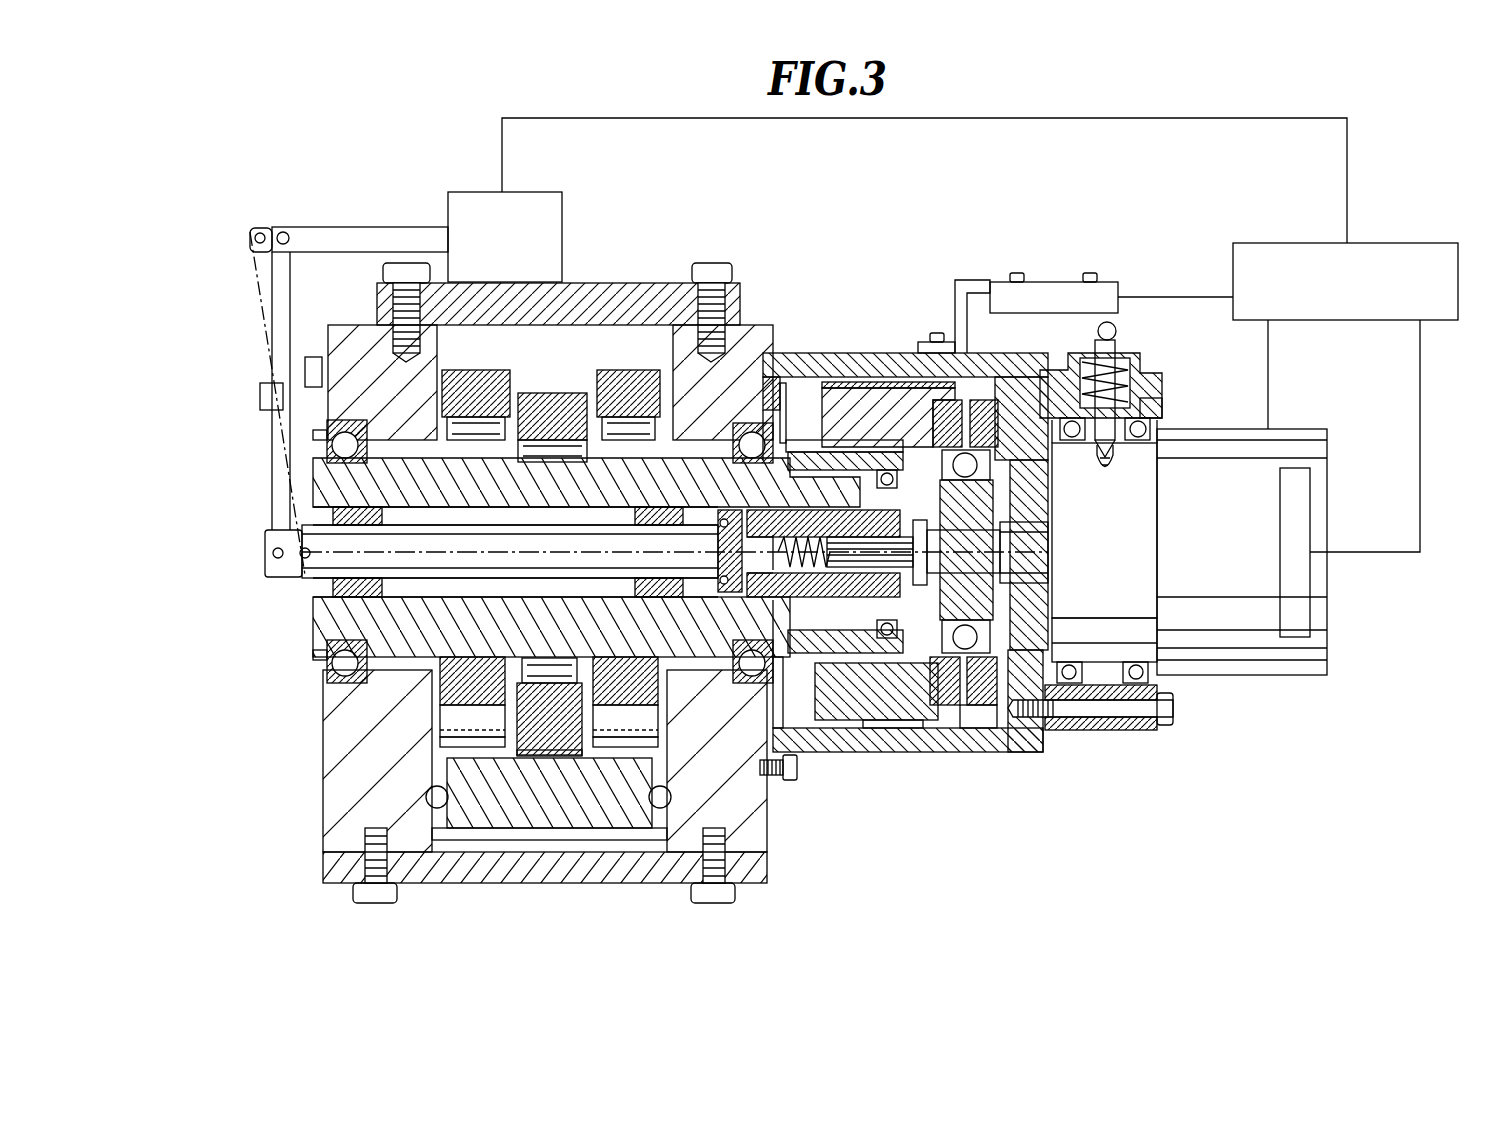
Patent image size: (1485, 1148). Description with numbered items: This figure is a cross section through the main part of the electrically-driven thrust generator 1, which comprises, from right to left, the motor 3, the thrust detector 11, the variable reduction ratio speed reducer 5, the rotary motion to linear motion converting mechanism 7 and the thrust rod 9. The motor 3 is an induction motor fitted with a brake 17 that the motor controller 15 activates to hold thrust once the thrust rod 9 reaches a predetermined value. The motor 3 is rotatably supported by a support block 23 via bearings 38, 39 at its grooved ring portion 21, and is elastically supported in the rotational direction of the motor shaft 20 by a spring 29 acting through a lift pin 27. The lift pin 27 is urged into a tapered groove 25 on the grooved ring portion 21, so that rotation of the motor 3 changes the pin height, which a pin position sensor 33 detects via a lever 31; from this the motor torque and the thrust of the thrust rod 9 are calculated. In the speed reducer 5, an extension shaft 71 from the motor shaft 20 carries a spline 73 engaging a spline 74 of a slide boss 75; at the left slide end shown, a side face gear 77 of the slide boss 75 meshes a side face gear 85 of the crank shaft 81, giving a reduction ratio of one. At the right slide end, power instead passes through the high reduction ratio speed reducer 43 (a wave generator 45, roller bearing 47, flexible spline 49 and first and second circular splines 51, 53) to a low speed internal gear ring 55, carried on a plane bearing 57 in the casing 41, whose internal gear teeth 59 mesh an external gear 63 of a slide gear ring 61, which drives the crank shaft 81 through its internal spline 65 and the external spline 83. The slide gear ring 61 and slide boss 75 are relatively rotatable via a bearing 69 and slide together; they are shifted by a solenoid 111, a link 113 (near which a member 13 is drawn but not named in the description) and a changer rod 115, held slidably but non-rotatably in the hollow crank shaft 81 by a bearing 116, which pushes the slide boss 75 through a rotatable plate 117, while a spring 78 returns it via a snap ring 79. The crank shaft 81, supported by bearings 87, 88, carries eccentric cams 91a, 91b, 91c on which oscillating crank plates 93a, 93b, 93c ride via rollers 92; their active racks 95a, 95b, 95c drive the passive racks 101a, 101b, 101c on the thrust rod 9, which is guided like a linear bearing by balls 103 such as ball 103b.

The electrically-driven thrust generator 1 is at (290, 172).
The motor 3 is at (1298, 427).
The variable reduction ratio speed reducer 5 is at (878, 340).
The rotary motion to linear motion converting mechanism 7 is at (582, 273).
The thrust rod 9 is at (582, 813).
The thrust detector 11 is at (1140, 332).
The arm 13 is at (403, 221).
The motor controller 15 is at (1282, 243).
The brake 17 is at (1313, 503).
The motor shaft 20 is at (1025, 527).
The grooved ring portion 21 is at (1160, 633).
The support block 23 is at (1163, 415).
The tapered groove 25 is at (1107, 478).
The lift pin 27 is at (1132, 412).
The elastic support member 29 is at (1140, 367).
The lever 31 is at (1117, 330).
The pin position sensor 33 is at (1060, 292).
The bearing 38 is at (1138, 447).
The bearing 39 is at (1070, 447).
The casing 41 is at (908, 355).
The high reduction ratio speed reducer 43 is at (968, 723).
The wave generator 45 is at (1008, 588).
The roller bearing 47 is at (990, 633).
The flexible spline 49 is at (1013, 708).
The No. 1 circular spline 51 is at (1033, 720).
The No. 2 circular spline 53 is at (955, 708).
The low speed internal gear ring 55 is at (832, 385).
The plane bearing 57 is at (868, 365).
The internal gear teeth 59 is at (815, 433).
The slide gear ring 61 is at (775, 433).
The external gear 63 is at (800, 433).
The internal spline 65 is at (783, 490).
The bearing 69 is at (900, 440).
The extension shaft 71 is at (958, 707).
The spline 73 is at (1010, 538).
The spline 74 is at (963, 551).
The slide boss 75 is at (800, 592).
The side face gear 77 is at (860, 450).
The spring 78 is at (825, 663).
The snap ring 79 is at (815, 703).
The crank shaft 81 is at (347, 492).
The external spline 83 is at (737, 478).
The side face gear 85 is at (880, 508).
The bearing 87 is at (733, 428).
The bearing 88 is at (325, 440).
The eccentric cam 91a is at (623, 418).
The eccentric cam 91b is at (580, 400).
The eccentric cam 91c is at (485, 414).
The rollers 92 is at (430, 673).
The oscillating crank plate 93a is at (676, 262).
The oscillating crank plate 93b is at (578, 388).
The oscillating crank plate 93c is at (440, 390).
The active rack 95a is at (630, 747).
The active rack 95b is at (560, 757).
The active rack 95c is at (472, 752).
The passive rack 101a is at (615, 747).
The passive rack 101b is at (533, 757).
The passive rack 101c is at (487, 747).
The balls 103 is at (672, 797).
The ball 103b is at (425, 797).
The solenoid 111 is at (558, 213).
The link 113 is at (254, 366).
The changer rod 115 is at (328, 563).
The bearing 116 is at (327, 585).
The rotatable plate 117 is at (797, 760).